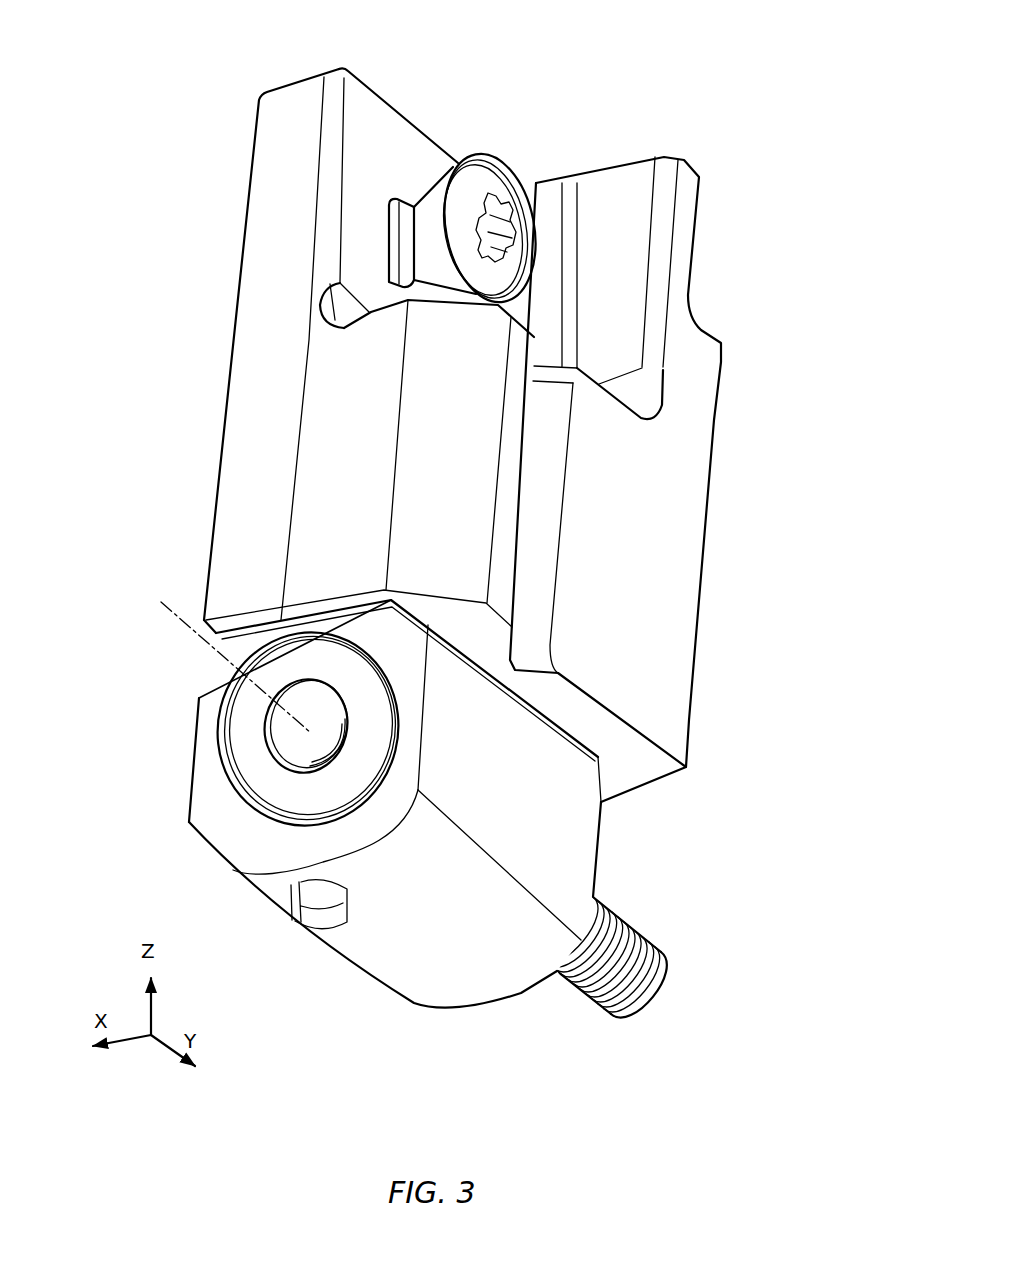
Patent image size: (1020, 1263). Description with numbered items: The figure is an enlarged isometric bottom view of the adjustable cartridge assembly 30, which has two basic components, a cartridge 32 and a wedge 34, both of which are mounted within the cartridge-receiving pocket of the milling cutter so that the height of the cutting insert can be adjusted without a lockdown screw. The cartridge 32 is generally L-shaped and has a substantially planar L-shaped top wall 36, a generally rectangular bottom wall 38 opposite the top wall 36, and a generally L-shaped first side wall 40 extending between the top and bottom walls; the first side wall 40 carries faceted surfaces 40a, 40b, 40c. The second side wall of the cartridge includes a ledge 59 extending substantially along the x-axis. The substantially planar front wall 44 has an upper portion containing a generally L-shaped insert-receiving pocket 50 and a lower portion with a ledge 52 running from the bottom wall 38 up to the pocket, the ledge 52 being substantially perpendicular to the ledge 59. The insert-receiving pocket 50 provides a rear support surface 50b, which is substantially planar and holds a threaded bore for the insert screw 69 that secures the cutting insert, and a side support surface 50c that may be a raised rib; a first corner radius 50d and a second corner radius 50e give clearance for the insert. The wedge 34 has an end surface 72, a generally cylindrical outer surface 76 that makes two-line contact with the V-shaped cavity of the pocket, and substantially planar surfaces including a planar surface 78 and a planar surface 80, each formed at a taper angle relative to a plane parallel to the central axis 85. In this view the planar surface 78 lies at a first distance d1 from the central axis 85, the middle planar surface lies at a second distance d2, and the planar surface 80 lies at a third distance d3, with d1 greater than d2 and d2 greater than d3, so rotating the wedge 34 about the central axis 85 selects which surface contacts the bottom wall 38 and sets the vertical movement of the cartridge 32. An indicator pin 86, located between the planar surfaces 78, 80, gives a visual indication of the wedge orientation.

The adjustable cartridge assembly 30 is at (148, 178).
The cartridge 32 is at (197, 121).
The wedge 34 is at (170, 723).
The top wall 36 is at (371, 83).
The bottom wall 38 is at (636, 770).
The first side wall 40 is at (252, 398).
The faceted surface 40a is at (238, 462).
The faceted surface 40b is at (327, 507).
The faceted surface 40c is at (437, 538).
The front wall 44 is at (664, 532).
The insert-receiving pocket 50 is at (372, 150).
The rear support surface 50b is at (386, 138).
The side support surface 50c is at (547, 197).
The first corner radius 50d is at (334, 303).
The second corner radius 50e is at (645, 398).
The ledge 52 is at (532, 563).
The ledge 59 is at (710, 330).
The insert screw 69 is at (489, 170).
The end surface 72 is at (220, 836).
The cylindrical outer surface 76 is at (386, 952).
The planar surface 78 is at (190, 787).
The planar surface 80 is at (573, 838).
The central axis 85 is at (166, 607).
The indicator pin 86 is at (318, 923).
The first distance d1 is at (300, 733).
The second distance d2 is at (324, 616).
The third distance d3 is at (417, 709).